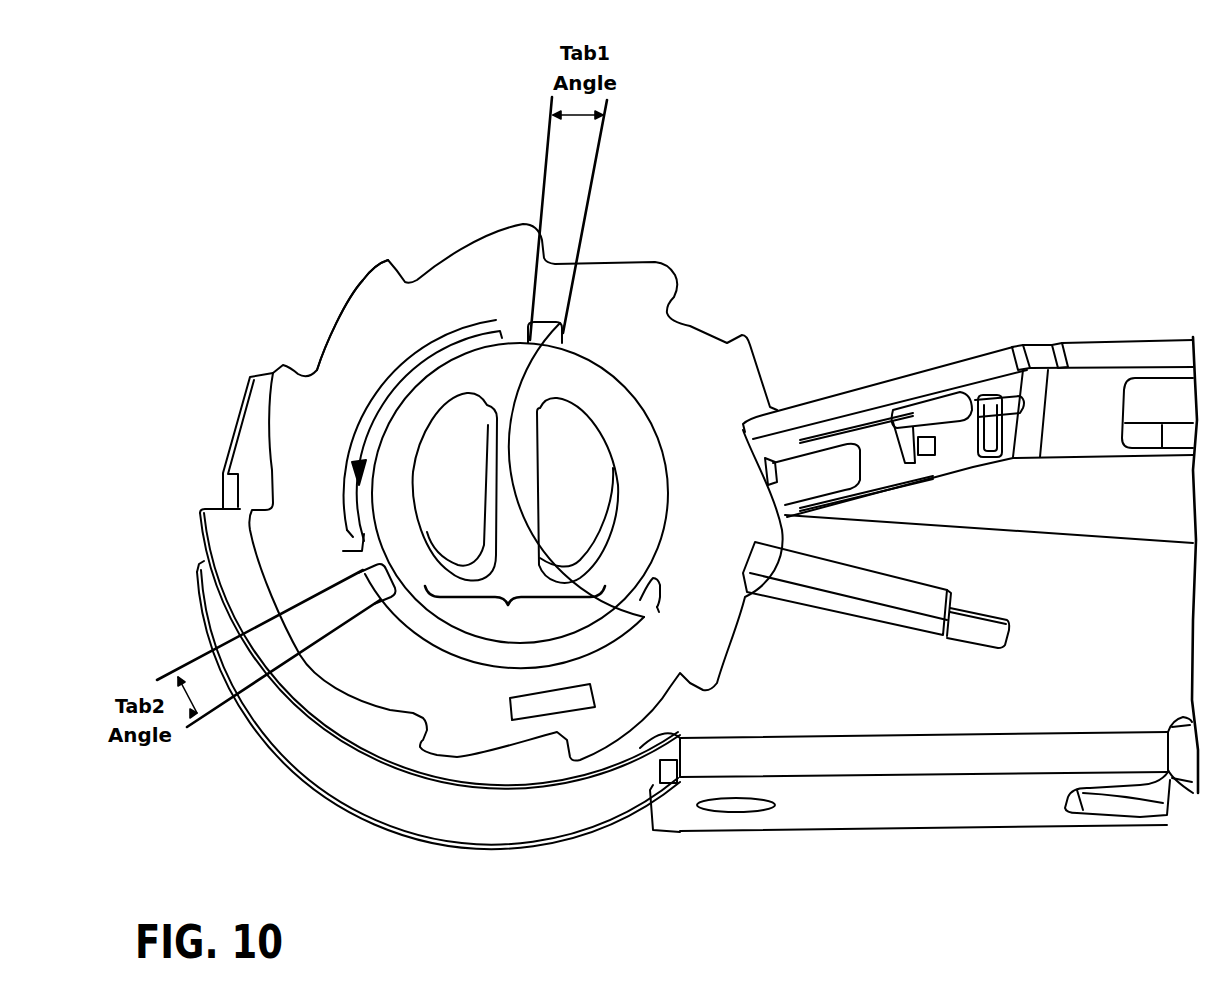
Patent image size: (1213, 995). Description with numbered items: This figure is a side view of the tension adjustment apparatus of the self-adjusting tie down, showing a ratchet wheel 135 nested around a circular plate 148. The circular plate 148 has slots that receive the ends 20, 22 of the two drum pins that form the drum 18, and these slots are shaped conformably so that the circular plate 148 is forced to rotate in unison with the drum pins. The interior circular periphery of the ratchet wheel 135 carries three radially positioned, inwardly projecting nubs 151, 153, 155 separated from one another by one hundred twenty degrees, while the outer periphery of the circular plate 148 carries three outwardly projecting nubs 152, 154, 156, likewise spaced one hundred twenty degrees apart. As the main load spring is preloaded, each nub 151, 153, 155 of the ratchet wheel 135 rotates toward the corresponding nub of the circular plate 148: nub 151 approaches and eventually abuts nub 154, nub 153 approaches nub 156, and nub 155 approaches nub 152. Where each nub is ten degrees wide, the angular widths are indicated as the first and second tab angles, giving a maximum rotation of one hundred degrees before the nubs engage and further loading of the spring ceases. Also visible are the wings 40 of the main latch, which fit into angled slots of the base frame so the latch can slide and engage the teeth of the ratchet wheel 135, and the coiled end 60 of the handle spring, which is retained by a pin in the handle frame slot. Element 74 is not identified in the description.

The drum 18 is at (516, 515).
The end of drum pin 20 is at (580, 468).
The end of drum pin 22 is at (453, 527).
The wings of main latch 40 is at (853, 580).
The coiled end of handle spring 60 is at (923, 408).
The bracket 74 is at (783, 447).
The ratchet wheel 135 is at (626, 295).
The circular plate 148 is at (585, 385).
The nub 151 is at (517, 337).
The nub 152 is at (563, 337).
The nub 153 is at (380, 586).
The nub 154 is at (363, 552).
The nub 155 is at (658, 572).
The nub 156 is at (657, 607).